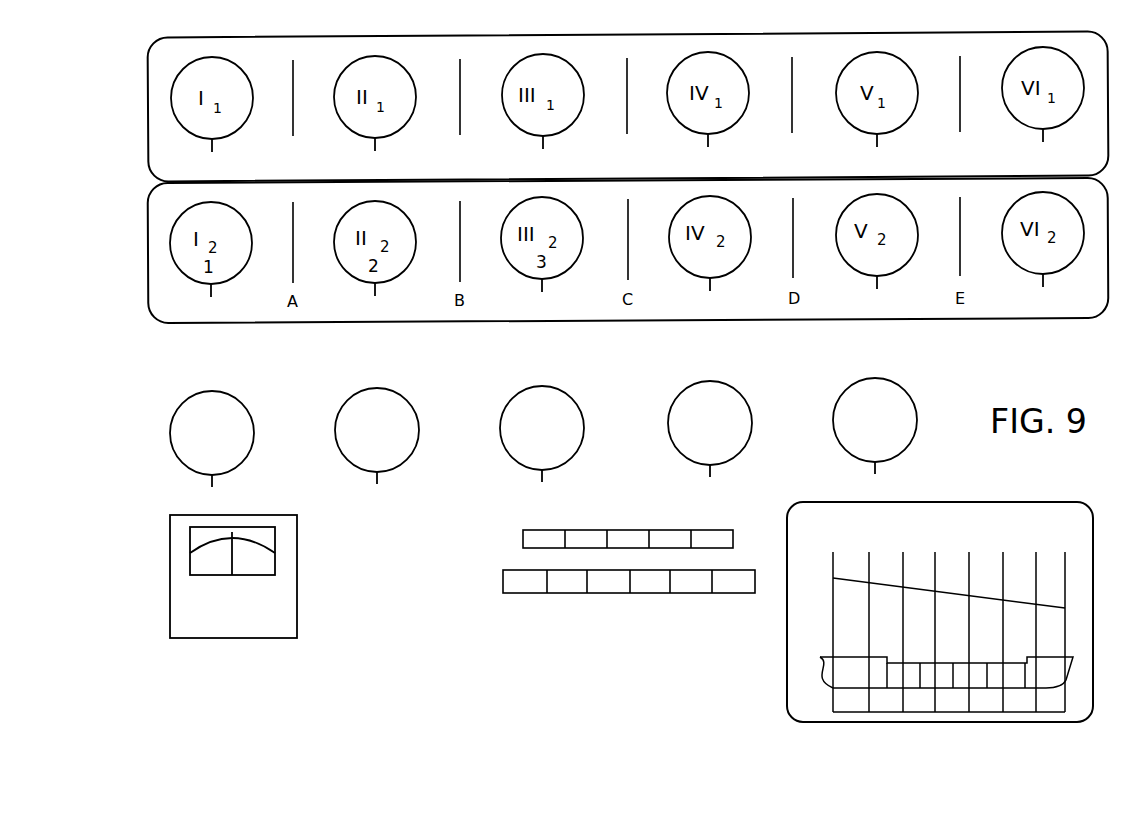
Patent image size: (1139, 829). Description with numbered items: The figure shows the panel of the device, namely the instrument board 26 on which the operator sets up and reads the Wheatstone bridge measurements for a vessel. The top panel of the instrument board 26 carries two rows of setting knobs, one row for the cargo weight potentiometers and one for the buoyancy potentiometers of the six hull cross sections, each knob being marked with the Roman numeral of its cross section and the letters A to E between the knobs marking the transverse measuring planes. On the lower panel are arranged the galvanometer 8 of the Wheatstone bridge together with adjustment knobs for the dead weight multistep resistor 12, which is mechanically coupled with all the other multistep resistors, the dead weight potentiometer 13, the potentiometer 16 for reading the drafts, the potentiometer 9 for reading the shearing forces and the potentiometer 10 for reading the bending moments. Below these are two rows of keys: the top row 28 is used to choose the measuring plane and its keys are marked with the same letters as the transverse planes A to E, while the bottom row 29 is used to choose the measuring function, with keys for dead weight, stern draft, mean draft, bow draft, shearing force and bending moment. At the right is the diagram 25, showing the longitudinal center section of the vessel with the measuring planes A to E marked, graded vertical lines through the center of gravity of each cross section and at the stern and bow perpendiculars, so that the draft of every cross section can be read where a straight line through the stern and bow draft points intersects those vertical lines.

The galvanometer 8 is at (180, 577).
The potentiometer for reading the shearing forces 9 is at (692, 413).
The potentiometer for reading the bending moments 10 is at (859, 411).
The dead weight multistep resistor 12 is at (193, 419).
The dead weight potentiometer 13 is at (358, 418).
The potentiometer for reading the drafts 16 is at (524, 415).
The diagram 25 is at (1041, 510).
The instrument board 26 is at (434, 656).
The top row of keys 28 is at (523, 541).
The bottom row of keys 29 is at (503, 585).